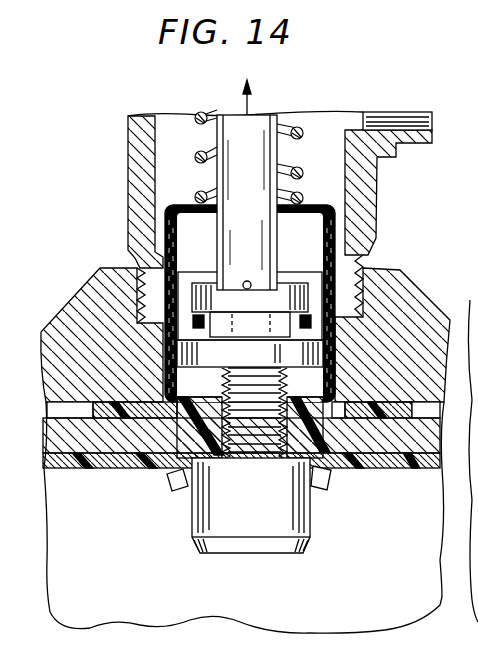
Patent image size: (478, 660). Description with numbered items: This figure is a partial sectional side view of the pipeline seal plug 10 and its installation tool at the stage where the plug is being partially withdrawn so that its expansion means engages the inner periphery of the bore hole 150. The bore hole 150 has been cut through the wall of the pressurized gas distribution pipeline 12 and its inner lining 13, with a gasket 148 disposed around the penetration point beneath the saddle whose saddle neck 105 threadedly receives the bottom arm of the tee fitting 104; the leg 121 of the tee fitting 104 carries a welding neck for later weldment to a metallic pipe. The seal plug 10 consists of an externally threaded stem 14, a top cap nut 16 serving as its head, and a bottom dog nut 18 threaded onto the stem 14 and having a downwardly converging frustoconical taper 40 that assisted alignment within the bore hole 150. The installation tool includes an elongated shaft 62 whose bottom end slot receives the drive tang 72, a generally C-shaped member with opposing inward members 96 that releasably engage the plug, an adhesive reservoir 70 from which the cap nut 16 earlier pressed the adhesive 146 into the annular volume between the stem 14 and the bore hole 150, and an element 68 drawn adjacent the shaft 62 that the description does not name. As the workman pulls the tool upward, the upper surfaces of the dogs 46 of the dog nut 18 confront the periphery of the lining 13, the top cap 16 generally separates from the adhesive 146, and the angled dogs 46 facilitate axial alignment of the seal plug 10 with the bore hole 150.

The seal plug 10 is at (213, 556).
The pipeline 12 is at (58, 440).
The lining 13 is at (120, 458).
The stem 14 is at (223, 382).
The top cap nut 16 is at (68, 244).
The bottom dog nut 18 is at (115, 310).
The frustoconical taper 40 is at (313, 542).
The dogs 46 is at (173, 491).
The shaft 62 is at (212, 135).
The spring coils 68 is at (298, 127).
The adhesive reservoir 70 is at (311, 206).
The drive tang 72 is at (296, 262).
The inward members 96 is at (184, 320).
The tee fitting 104 is at (128, 139).
The saddle neck 105 is at (104, 268).
The leg 121 is at (414, 145).
The adhesive 146 is at (354, 460).
The gasket 148 is at (101, 413).
The bore hole 150 is at (148, 461).